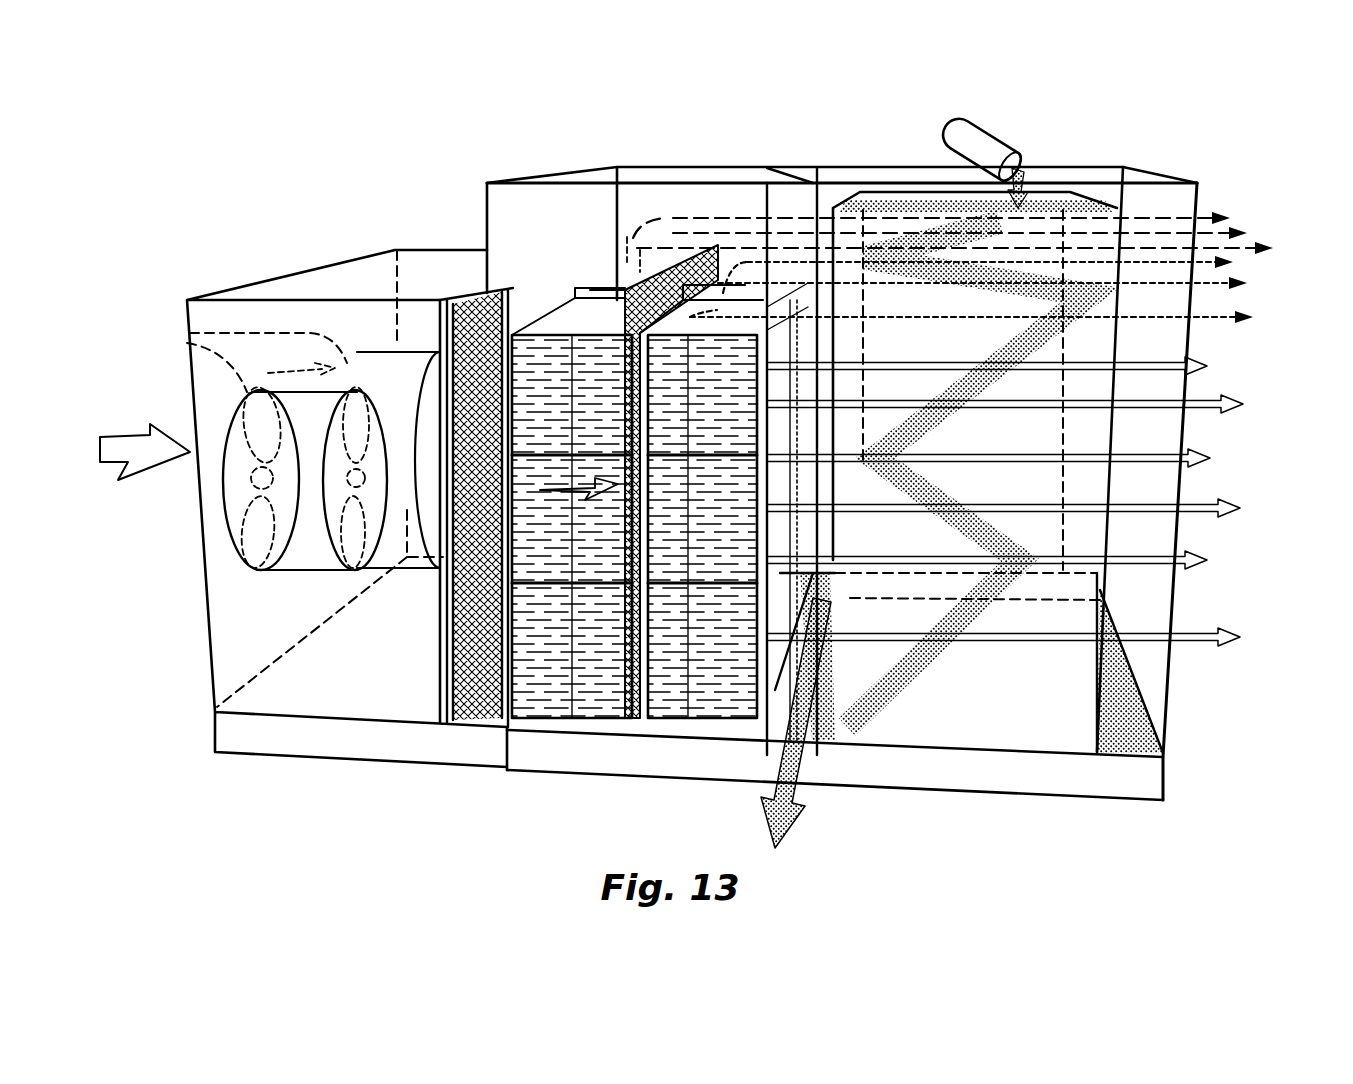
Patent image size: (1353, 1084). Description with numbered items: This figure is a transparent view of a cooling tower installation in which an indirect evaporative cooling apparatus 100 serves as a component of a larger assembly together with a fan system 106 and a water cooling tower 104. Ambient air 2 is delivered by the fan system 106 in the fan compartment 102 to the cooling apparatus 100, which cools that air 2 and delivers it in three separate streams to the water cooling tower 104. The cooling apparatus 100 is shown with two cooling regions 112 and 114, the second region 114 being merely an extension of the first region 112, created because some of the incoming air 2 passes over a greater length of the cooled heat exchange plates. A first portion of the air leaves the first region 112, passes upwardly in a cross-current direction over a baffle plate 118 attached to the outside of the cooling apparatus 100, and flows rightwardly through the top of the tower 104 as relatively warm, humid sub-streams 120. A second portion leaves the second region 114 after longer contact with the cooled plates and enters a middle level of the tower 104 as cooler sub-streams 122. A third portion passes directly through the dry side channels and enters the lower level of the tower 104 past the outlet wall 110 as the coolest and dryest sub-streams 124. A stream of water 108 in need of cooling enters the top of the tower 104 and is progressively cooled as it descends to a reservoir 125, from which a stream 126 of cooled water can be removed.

The ambient air 2 is at (135, 452).
The indirect evaporative cooling apparatus 100 is at (638, 143).
The fan compartment 102 is at (380, 270).
The water cooling tower 104 is at (1062, 146).
The fan system 106 is at (192, 330).
The stream of water 108 is at (962, 152).
The outlet wall 110 is at (1150, 592).
The first cooling region 112 is at (585, 615).
The second cooling region 114 is at (707, 703).
The baffle plate 118 is at (667, 700).
The sub-streams 120 is at (1274, 249).
The sub-streams 122 is at (1250, 284).
The sub-streams 124 is at (1215, 458).
The reservoir 125 is at (1068, 783).
The stream of cooled water 126 is at (808, 808).